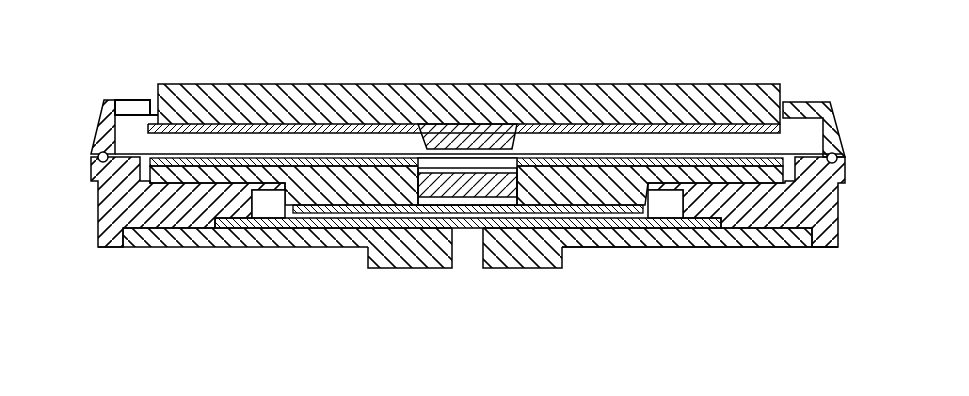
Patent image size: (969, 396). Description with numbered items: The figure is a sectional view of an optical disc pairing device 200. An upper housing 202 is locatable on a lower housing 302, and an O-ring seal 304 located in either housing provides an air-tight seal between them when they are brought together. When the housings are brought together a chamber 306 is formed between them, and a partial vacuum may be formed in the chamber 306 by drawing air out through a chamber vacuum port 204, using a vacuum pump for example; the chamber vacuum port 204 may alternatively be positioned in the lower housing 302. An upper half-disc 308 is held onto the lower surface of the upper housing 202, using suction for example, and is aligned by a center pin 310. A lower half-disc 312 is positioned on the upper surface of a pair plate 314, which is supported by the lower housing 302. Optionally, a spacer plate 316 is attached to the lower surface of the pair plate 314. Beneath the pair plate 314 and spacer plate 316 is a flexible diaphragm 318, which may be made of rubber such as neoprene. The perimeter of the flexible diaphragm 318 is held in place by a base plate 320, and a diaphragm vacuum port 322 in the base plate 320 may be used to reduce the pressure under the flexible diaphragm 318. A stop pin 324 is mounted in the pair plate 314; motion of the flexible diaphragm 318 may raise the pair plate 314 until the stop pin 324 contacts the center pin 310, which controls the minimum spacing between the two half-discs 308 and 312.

The optical disc pairing device 200 is at (146, 51).
The upper housing 202 is at (464, 102).
The chamber vacuum port 204 is at (135, 100).
The lower housing 302 is at (507, 256).
The O-ring seal 304 is at (98, 156).
The chamber 306 is at (640, 145).
The upper half-disc 308 is at (792, 112).
The center pin 310 is at (457, 124).
The lower half-disc 312 is at (142, 160).
The pair plate 314 is at (258, 206).
The spacer plate 316 is at (582, 212).
The flexible diaphragm 318 is at (352, 218).
The base plate 320 is at (698, 247).
The diaphragm vacuum port 322 is at (466, 268).
The stop pin 324 is at (518, 152).